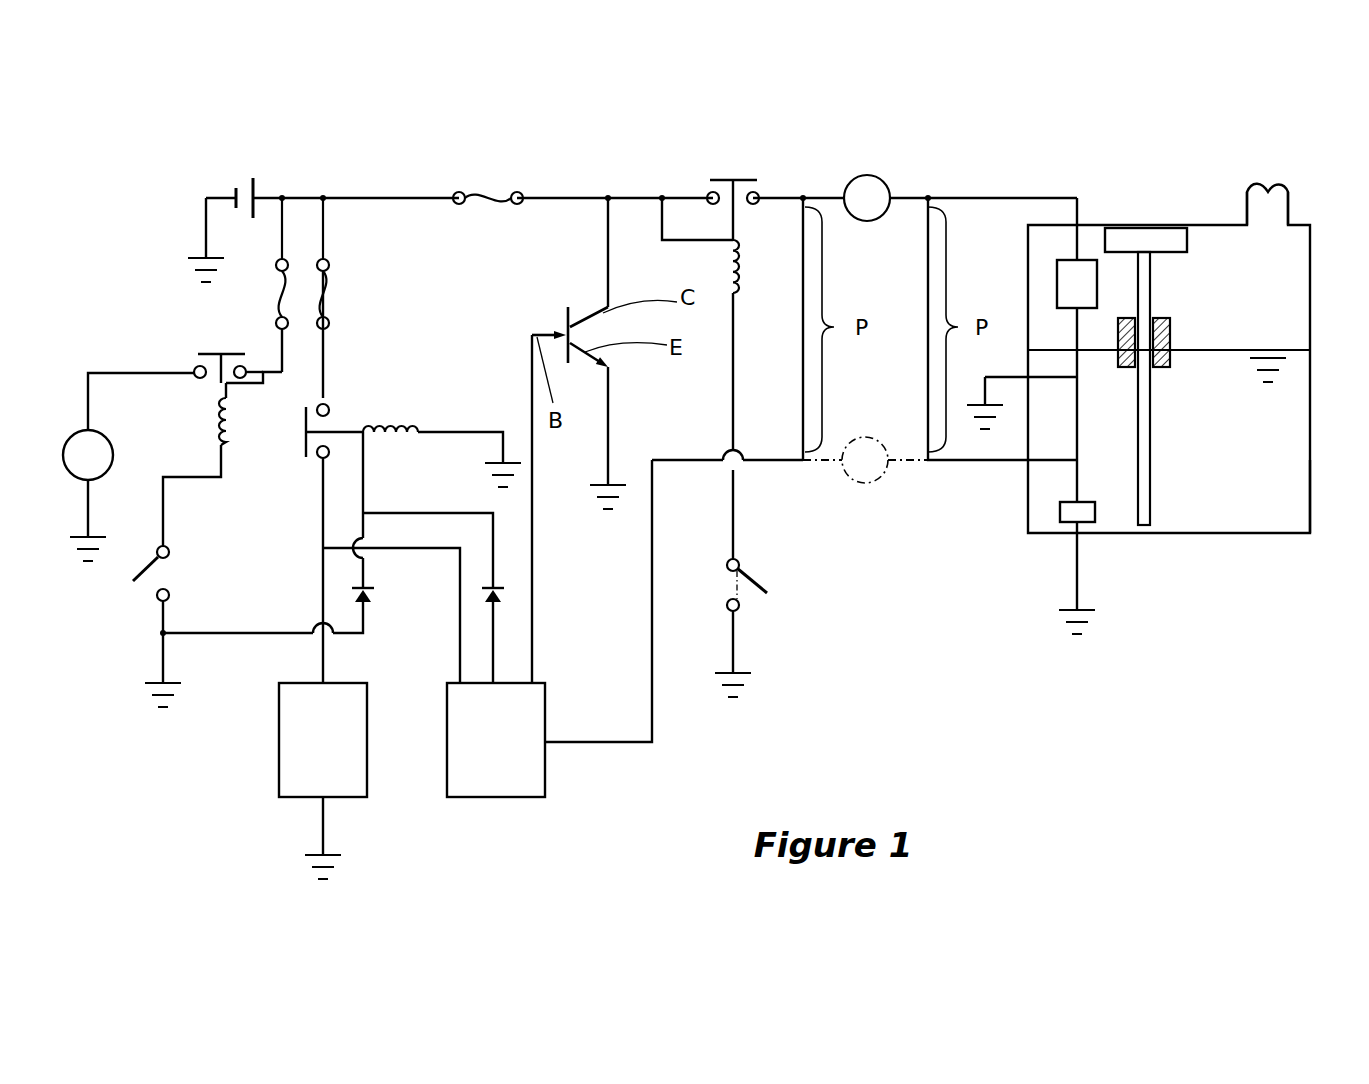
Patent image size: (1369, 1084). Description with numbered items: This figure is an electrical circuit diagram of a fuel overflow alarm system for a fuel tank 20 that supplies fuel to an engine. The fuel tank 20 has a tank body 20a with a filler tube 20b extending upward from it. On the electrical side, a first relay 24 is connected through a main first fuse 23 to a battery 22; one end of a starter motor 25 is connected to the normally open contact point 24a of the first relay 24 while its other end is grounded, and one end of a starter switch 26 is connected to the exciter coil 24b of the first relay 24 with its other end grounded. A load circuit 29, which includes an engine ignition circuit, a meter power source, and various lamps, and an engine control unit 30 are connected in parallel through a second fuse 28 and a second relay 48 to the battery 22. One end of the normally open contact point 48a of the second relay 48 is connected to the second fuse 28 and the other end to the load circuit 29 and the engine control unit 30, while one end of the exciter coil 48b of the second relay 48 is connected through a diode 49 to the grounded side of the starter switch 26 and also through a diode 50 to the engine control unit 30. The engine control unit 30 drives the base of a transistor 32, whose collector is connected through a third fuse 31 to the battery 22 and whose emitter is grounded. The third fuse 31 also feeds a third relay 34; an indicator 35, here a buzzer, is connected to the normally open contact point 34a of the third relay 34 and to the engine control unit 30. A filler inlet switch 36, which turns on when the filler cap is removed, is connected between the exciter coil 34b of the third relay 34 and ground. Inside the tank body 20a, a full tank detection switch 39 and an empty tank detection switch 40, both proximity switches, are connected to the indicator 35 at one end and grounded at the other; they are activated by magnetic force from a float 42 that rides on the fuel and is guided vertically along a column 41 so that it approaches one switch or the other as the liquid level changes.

The fuel tank 20 is at (1203, 206).
The tank body 20a is at (1310, 460).
The filler tube 20b is at (1237, 206).
The battery 22 is at (243, 178).
The main first fuse 23 is at (278, 292).
The first relay 24 is at (179, 426).
The normally open contact point 24a is at (192, 362).
The exciter coil 24b is at (232, 420).
The starter motor 25 is at (66, 430).
The starter switch 26 is at (167, 569).
The second fuse 28 is at (327, 295).
The load circuit 29 is at (278, 768).
The engine control unit 30 is at (497, 798).
The third fuse 31 is at (487, 188).
The transistor 32 is at (552, 300).
The third relay 34 is at (720, 221).
The normally open contact point 34a is at (709, 192).
The exciter coil 34b is at (743, 262).
The indicator 35 is at (882, 175).
The filler inlet switch 36 is at (757, 570).
The full tank detection switch 39 is at (1056, 287).
The empty tank detection switch 40 is at (1054, 513).
The column 41 is at (1153, 285).
The float 42 is at (1171, 337).
The second relay 48 is at (343, 394).
The normally open contact point 48a is at (329, 408).
The exciter coil 48b is at (402, 418).
The diode 49 is at (367, 597).
The diode 50 is at (497, 595).